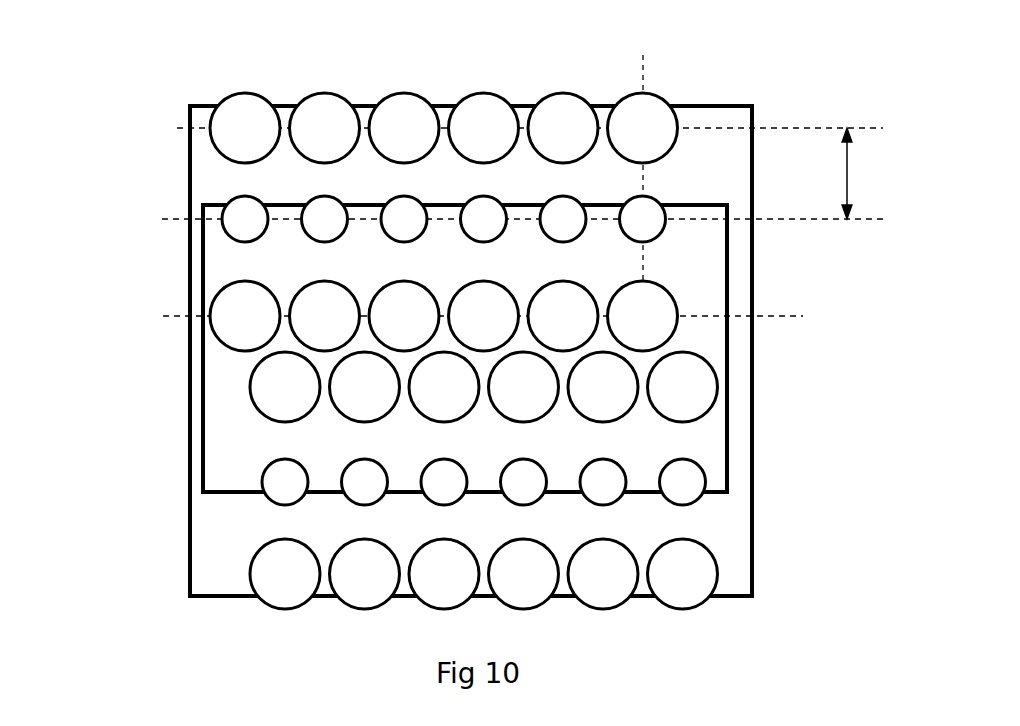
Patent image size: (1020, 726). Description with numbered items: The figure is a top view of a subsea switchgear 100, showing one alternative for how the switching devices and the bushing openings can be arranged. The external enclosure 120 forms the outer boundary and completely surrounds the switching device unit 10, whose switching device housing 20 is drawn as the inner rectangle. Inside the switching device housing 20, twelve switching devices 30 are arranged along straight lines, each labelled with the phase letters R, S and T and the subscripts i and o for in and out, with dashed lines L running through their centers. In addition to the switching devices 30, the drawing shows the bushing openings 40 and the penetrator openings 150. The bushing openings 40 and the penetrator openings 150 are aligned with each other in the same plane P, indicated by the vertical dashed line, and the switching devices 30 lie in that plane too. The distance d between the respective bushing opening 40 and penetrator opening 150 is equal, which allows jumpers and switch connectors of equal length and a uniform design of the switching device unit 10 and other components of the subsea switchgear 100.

The subsea switchgear 100 is at (150, 49).
The external enclosure 120 is at (190, 262).
The penetrator opening 150 is at (211, 128).
The switching device unit 10 is at (737, 171).
The switching device housing 20 is at (727, 255).
The switching devices 30 is at (678, 325).
The bushing openings 40 is at (653, 200).